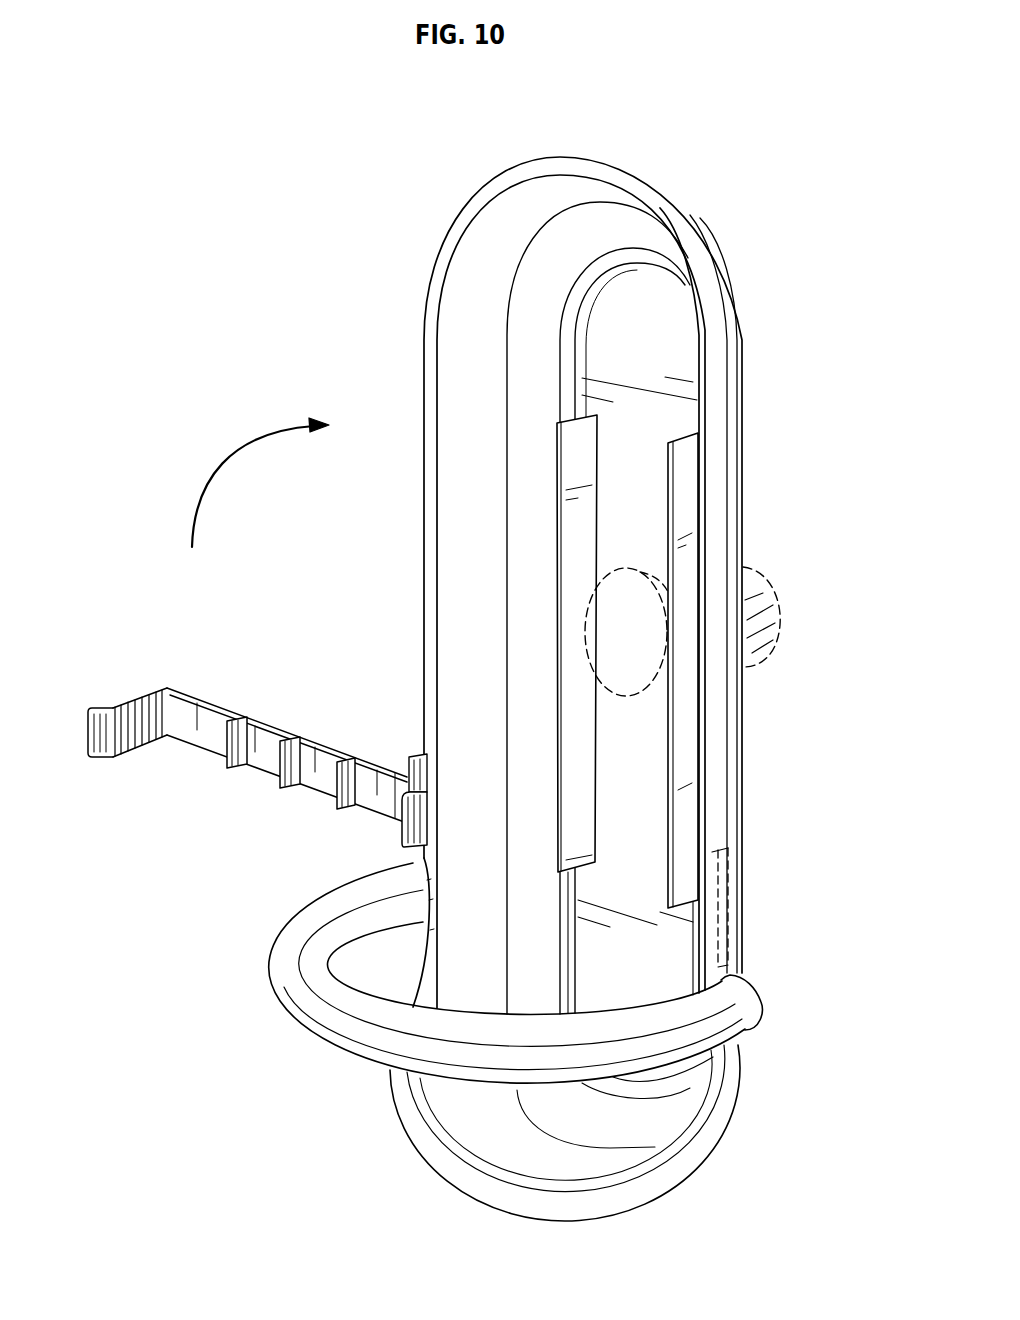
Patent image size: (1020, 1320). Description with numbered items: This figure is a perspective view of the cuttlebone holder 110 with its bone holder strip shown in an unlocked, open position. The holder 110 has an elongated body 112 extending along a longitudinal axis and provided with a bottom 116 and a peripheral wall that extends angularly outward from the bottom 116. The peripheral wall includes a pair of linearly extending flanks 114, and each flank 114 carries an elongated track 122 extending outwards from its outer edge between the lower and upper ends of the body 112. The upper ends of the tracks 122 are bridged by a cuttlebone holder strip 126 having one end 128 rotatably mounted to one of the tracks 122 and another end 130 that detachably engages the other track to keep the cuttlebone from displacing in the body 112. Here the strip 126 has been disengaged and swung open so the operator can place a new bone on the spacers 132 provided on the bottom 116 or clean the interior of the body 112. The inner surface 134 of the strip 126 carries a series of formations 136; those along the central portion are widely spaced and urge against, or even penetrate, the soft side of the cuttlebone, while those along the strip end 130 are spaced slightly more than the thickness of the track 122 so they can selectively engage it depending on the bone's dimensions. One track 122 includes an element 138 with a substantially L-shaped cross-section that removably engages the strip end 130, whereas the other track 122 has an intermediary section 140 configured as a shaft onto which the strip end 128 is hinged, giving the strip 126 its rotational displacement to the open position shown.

The cuttlebone holder 110 is at (246, 500).
The elongated body 112 is at (735, 500).
The flanks 114 is at (692, 742).
The bottom 116 is at (660, 358).
The track 122 is at (475, 837).
The cuttlebone holder strip 126 is at (313, 747).
The strip end 128 is at (393, 793).
The strip end 130 is at (105, 710).
The spacers 132 is at (675, 542).
The inner surface 134 is at (216, 717).
The formations 136 is at (278, 763).
The element 138 is at (712, 887).
The intermediary section 140 is at (430, 810).